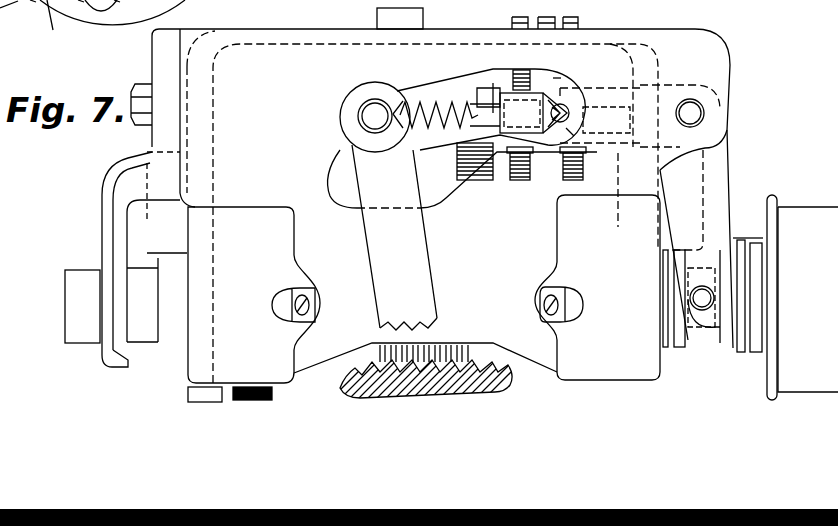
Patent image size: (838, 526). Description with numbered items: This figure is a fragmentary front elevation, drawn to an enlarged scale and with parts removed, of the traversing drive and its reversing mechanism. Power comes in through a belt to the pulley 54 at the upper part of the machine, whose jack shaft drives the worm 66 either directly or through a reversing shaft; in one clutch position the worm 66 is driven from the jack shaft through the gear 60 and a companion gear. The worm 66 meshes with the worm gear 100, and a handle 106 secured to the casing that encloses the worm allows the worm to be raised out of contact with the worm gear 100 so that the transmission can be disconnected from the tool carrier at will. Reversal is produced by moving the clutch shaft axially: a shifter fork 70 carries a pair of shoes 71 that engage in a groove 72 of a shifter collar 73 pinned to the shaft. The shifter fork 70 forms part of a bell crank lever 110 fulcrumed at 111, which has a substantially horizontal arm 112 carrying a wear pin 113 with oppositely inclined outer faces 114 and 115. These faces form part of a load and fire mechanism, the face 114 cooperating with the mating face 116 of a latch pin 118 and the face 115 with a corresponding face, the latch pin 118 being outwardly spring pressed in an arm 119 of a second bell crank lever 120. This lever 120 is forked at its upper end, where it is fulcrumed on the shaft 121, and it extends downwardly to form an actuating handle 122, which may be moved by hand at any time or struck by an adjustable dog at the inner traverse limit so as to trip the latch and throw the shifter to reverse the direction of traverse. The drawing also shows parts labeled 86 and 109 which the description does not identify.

The pulley 54 is at (515, 196).
The gear 60 is at (117, 0).
The worm 66 is at (478, 327).
The shifter fork 70 is at (40, 8).
The shoes 71 is at (33, 13).
The groove 72 is at (705, 337).
The shifter collar 73 is at (727, 337).
The gear 86 is at (80, 0).
The worm gear 100 is at (340, 392).
The handle 106 is at (112, 362).
The casing 109 is at (270, 48).
The bell crank lever 110 is at (720, 173).
The fulcrum 111 is at (692, 112).
The horizontal arm 112 is at (662, 14).
The wear pin 113 is at (600, 115).
The inclined outer face 114 is at (560, 150).
The inclined outer face 115 is at (570, 133).
The mating face 116 is at (557, 78).
The latch pin 118 is at (552, 88).
The arm 119 is at (420, 88).
The bell crank lever 120 is at (343, 145).
The shaft 121 is at (365, 108).
The actuating handle 122 is at (394, 237).